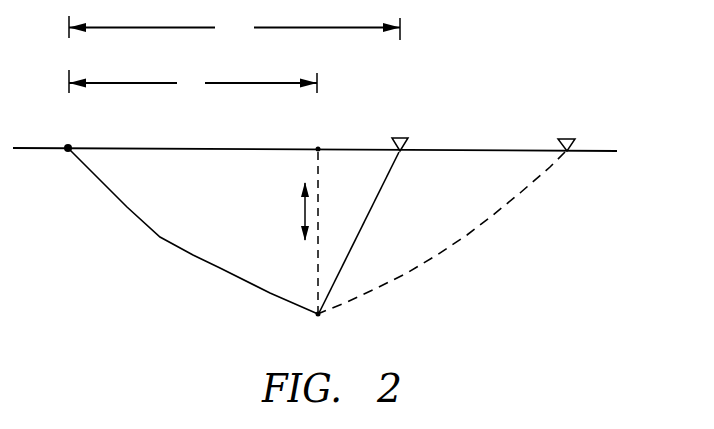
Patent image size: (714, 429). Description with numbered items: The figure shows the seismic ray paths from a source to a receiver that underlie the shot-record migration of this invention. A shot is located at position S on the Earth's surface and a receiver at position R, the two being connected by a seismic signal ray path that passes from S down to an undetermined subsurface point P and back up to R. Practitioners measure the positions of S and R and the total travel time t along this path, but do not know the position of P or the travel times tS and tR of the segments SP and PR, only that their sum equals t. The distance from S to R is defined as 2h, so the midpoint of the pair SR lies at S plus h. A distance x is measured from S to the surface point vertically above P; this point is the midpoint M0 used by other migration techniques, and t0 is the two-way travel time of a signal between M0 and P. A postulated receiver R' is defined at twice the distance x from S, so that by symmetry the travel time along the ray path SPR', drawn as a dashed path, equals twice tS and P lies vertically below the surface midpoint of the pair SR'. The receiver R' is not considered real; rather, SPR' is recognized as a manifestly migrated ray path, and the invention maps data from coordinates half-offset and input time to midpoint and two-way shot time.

The shot position S is at (68, 130).
The midpoint M0 is at (314, 132).
The receiver position R is at (400, 131).
The postulated receiver R' is at (568, 131).
The subsurface point P is at (317, 328).
The source-receiver distance 2h is at (234, 28).
The distance from source to surface point above P x is at (193, 81).
The two-way vertical travel time t0 is at (299, 232).
The travel time of segment SP tS is at (316, 231).
The travel time of segment PR tR is at (363, 232).